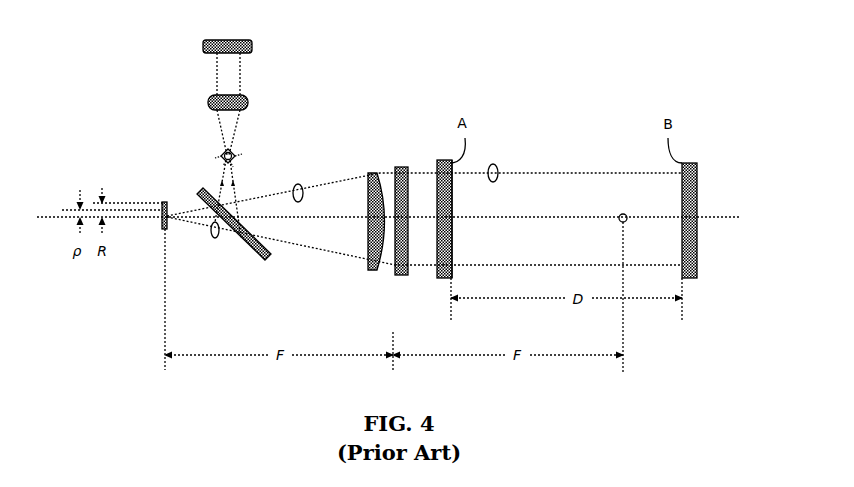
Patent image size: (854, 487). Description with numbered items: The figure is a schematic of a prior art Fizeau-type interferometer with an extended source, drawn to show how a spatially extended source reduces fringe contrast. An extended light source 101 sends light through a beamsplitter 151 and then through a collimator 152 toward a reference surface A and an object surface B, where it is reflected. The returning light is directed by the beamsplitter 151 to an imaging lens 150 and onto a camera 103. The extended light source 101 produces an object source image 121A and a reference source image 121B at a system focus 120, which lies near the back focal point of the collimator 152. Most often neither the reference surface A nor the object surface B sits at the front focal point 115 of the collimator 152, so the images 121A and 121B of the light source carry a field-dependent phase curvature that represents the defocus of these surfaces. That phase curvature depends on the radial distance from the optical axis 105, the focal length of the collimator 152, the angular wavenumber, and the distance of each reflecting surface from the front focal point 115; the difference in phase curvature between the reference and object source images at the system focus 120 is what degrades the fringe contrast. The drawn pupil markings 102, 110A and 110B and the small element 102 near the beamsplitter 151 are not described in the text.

The extended light source 101 is at (165, 232).
The beam splitter 102 is at (217, 240).
The camera 103 is at (227, 56).
The optical axis 105 is at (717, 220).
The first pupil 110A is at (300, 186).
The second pupil 110B is at (493, 164).
The front focal point 115 is at (620, 215).
The system focus 120 is at (222, 153).
The object source image 121A is at (217, 158).
The reference source image 121B is at (218, 154).
The imaging lens 150 is at (250, 98).
The beamsplitter 151 is at (265, 257).
The collimator 152 is at (412, 273).